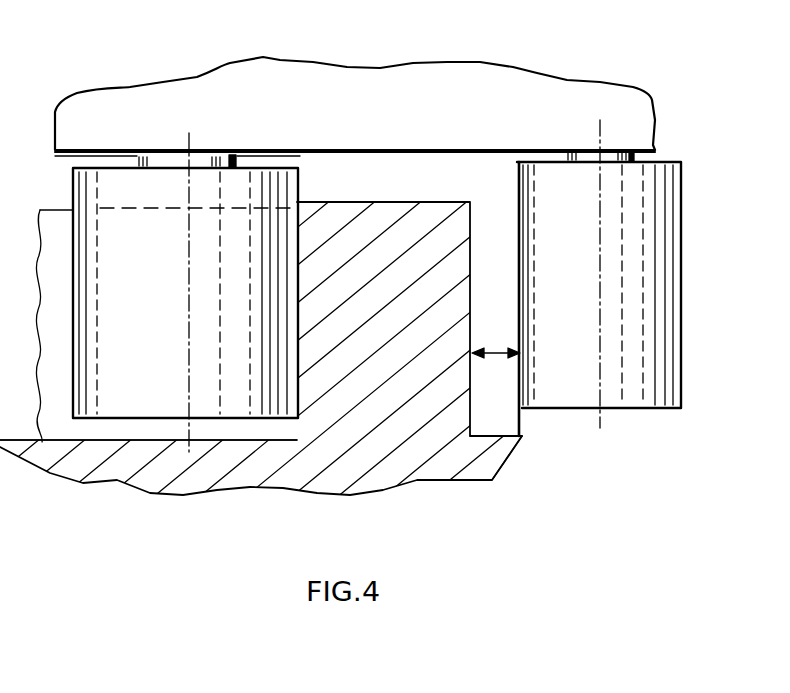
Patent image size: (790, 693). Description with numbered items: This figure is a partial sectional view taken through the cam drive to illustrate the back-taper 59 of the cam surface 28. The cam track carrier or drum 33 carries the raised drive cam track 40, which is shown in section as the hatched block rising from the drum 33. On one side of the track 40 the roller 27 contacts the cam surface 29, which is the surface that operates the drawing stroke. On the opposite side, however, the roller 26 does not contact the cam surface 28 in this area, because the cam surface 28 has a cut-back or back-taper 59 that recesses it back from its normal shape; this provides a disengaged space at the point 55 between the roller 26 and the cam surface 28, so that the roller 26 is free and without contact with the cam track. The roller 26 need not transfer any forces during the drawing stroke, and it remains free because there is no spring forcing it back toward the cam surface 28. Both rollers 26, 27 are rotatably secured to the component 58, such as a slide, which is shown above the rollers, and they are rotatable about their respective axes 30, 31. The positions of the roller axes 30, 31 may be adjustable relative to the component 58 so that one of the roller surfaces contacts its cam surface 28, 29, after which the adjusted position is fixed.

The component 58 is at (345, 90).
The drive cam track 40 is at (417, 223).
The cam surface 29 is at (58, 237).
The roller 27 is at (257, 398).
The roller 26 is at (653, 363).
The cam surface 28 is at (500, 312).
The axis 30 is at (600, 234).
The back-taper 59 is at (500, 358).
The point 55 is at (522, 420).
The cam track carrier or drum 33 is at (512, 452).
The axis 31 is at (192, 392).